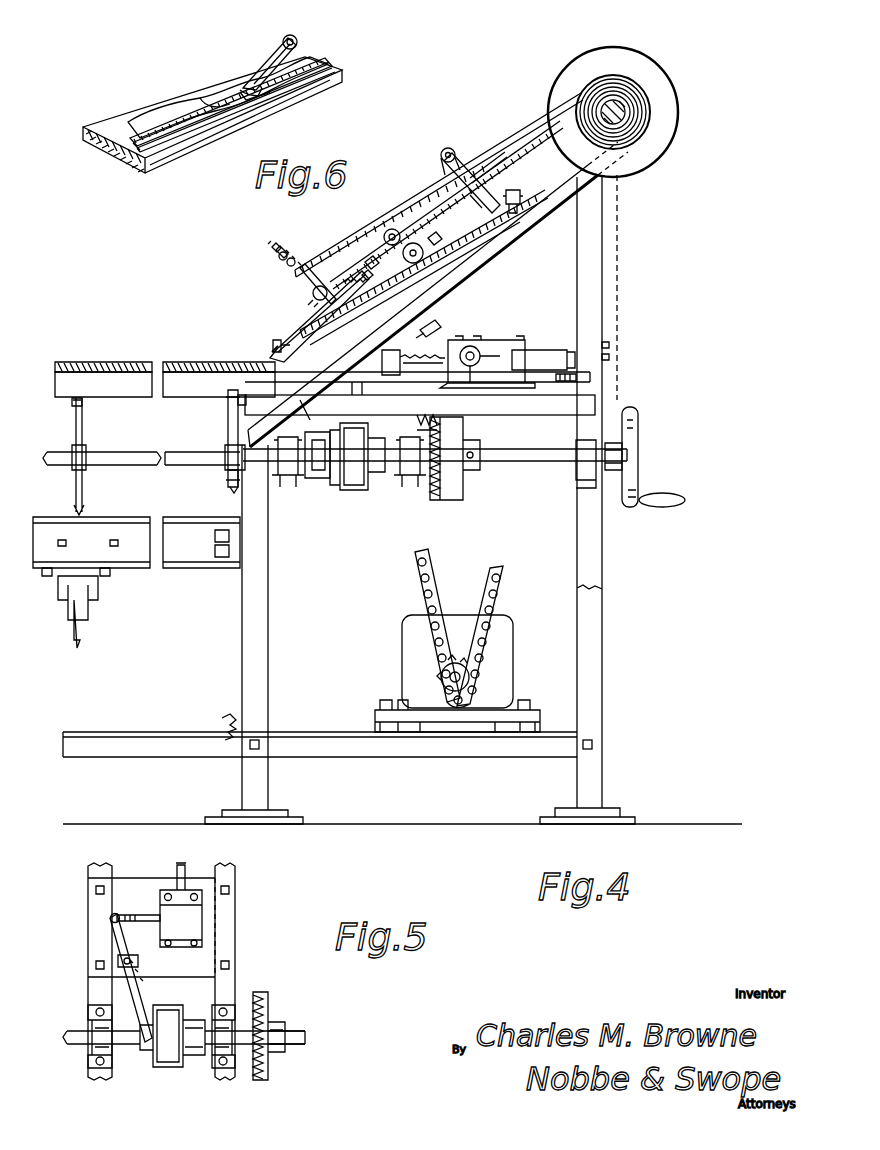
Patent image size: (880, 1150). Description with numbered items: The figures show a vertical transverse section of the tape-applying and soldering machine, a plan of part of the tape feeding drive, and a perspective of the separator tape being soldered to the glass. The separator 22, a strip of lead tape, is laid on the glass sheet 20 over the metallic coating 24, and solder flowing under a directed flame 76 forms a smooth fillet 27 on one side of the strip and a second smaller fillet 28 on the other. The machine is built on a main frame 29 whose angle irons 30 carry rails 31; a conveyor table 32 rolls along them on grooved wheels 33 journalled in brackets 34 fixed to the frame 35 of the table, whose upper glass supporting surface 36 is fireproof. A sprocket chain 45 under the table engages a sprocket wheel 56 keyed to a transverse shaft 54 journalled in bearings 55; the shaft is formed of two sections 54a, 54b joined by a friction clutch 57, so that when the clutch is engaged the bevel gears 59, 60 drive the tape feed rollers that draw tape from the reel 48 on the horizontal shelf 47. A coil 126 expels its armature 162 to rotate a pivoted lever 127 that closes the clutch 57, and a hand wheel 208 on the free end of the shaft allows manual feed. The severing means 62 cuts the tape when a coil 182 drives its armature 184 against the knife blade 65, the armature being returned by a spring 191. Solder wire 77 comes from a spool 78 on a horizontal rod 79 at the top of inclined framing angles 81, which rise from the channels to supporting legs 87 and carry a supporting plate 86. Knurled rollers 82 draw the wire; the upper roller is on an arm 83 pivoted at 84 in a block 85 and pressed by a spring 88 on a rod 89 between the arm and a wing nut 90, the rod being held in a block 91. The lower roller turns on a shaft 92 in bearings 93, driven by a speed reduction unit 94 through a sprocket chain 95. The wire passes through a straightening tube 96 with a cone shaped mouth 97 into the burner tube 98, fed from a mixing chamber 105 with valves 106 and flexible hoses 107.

In FIG. 4, the sheet of glass 20 is at (195, 359).
In FIG. 6, the sheet of glass 20 is at (103, 165).
In FIG. 4, the separator 22 is at (265, 347).
In FIG. 6, the separator 22 is at (156, 126).
In FIG. 6, the metallic coating 24 is at (332, 72).
In FIG. 6, the fillet 27 is at (165, 142).
In FIG. 6, the second smaller fillet 28 is at (137, 146).
In FIG. 4, the main frame 29 is at (234, 620).
In FIG. 4, the angle irons 30 is at (236, 487).
In FIG. 4, the rails 31 is at (226, 440).
In FIG. 4, the conveyor table 32 is at (131, 387).
In FIG. 4, the grooved wheels 33 is at (228, 415).
In FIG. 4, the brackets 34 is at (247, 400).
In FIG. 4, the frame of the table 35 is at (187, 385).
In FIG. 4, the upper glass supporting surface 36 is at (135, 368).
In FIG. 4, the sprocket chain 45 is at (72, 403).
In FIG. 4, the horizontal shelf 47 is at (420, 405).
In FIG. 4, the reel 48 is at (613, 346).
In FIG. 4, the shaft 54 is at (176, 450).
In FIG. 5, the shaft 54 is at (299, 1050).
In FIG. 4, the shaft section 54a is at (110, 455).
In FIG. 5, the shaft section 54a is at (76, 1042).
In FIG. 4, the shaft section 54b is at (512, 452).
In FIG. 5, the shaft section 54b is at (305, 1038).
In FIG. 4, the bearings 55 is at (288, 478).
In FIG. 5, the bearings 55 is at (104, 1050).
In FIG. 4, the sprocket wheel 56 is at (85, 492).
In FIG. 4, the friction clutch 57 is at (358, 487).
In FIG. 5, the friction clutch 57 is at (170, 1038).
In FIG. 4, the bevel gear 59 is at (462, 434).
In FIG. 5, the bevel gear 59 is at (265, 1062).
In FIG. 4, the bevel gear 60 is at (428, 425).
In FIG. 4, the severing means 62 is at (354, 398).
In FIG. 4, the knife blade 65 is at (411, 382).
In FIG. 6, the directed flame 76 is at (218, 98).
In FIG. 4, the solder wire 77 is at (528, 125).
In FIG. 4, the spool 78 is at (645, 78).
In FIG. 4, the horizontal rod 79 is at (613, 100).
In FIG. 4, the inclined framing angles 81 is at (545, 200).
In FIG. 4, the knurled rollers 82 is at (398, 231).
In FIG. 4, the arm 83 is at (398, 198).
In FIG. 4, the pivot 84 is at (450, 148).
In FIG. 4, the block 85 is at (470, 172).
In FIG. 4, the supporting plate 86 is at (514, 190).
In FIG. 4, the supporting legs 87 is at (600, 280).
In FIG. 4, the spring 88 is at (292, 253).
In FIG. 4, the rod 89 is at (305, 282).
In FIG. 4, the wing nut 90 is at (273, 257).
In FIG. 4, the block 91 is at (316, 300).
In FIG. 4, the shaft 92 is at (438, 262).
In FIG. 4, the bearings 93 is at (450, 248).
In FIG. 4, the speed reduction unit 94 is at (510, 637).
In FIG. 4, the sprocket chain 95 is at (505, 588).
In FIG. 4, the straightening tube 96 is at (462, 193).
In FIG. 4, the cone shaped mouth 97 is at (484, 160).
In FIG. 4, the burner tube 98 is at (281, 345).
In FIG. 6, the burner tube 98 is at (267, 56).
In FIG. 4, the mixing chamber 105 is at (371, 266).
In FIG. 4, the valves 106 is at (350, 279).
In FIG. 4, the flexible hoses 107 is at (428, 327).
In FIG. 5, the coil 126 is at (195, 920).
In FIG. 4, the pivoted lever 127 is at (318, 480).
In FIG. 5, the pivoted lever 127 is at (116, 947).
In FIG. 5, the armature 162 is at (133, 915).
In FIG. 4, the coil 182 is at (497, 340).
In FIG. 4, the armature 184 is at (542, 350).
In FIG. 4, the spring 191 is at (578, 377).
In FIG. 4, the hand wheel 208 is at (640, 452).